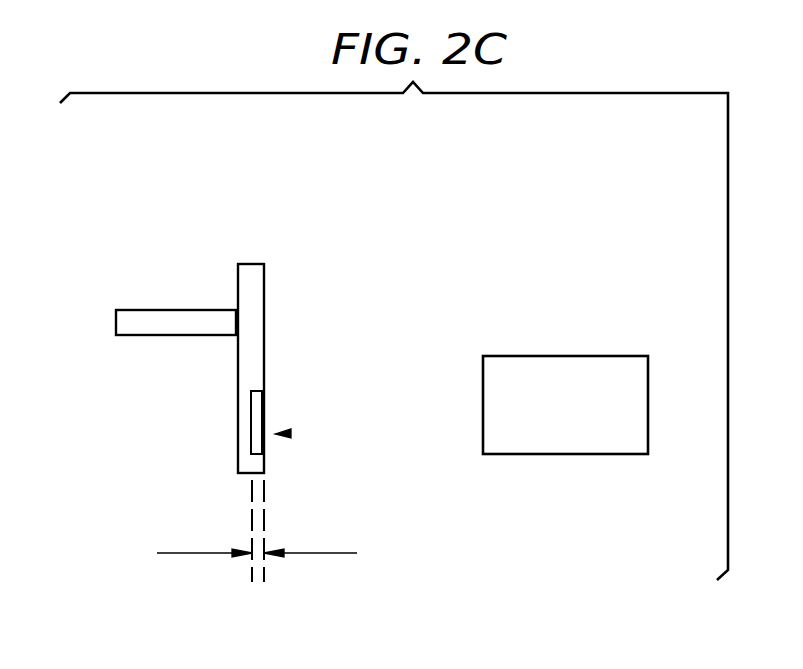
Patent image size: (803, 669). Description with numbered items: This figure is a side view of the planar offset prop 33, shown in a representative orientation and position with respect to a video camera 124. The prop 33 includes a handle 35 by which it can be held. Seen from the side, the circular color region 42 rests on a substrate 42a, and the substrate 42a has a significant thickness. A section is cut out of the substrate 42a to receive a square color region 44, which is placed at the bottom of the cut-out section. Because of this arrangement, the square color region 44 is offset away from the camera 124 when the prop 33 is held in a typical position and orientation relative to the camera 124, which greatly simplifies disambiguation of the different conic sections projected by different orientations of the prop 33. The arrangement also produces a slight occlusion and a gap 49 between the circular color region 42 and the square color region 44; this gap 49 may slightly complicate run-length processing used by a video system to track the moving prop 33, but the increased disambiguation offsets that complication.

The prop 33 is at (172, 210).
The handle 35 is at (145, 310).
The circular color region 42 is at (266, 287).
The substrate 42a is at (237, 428).
The square color region 44 is at (288, 434).
The gap 49 is at (254, 580).
The video camera 124 is at (605, 356).